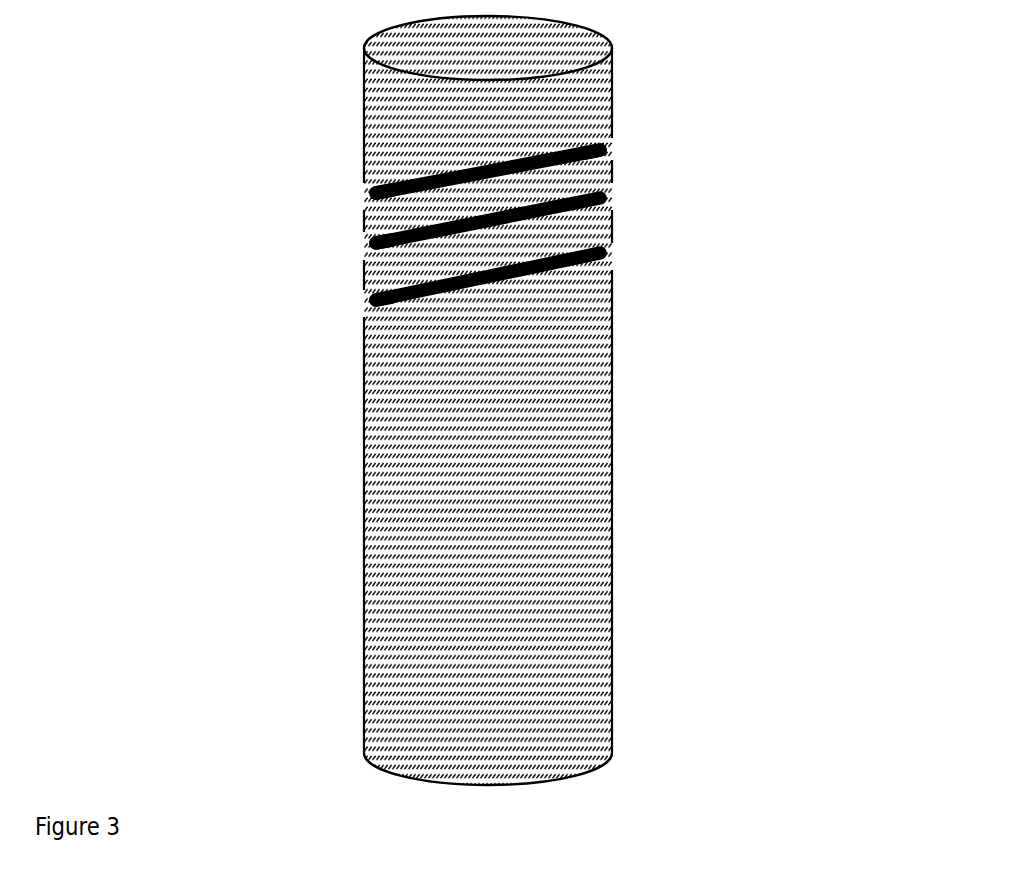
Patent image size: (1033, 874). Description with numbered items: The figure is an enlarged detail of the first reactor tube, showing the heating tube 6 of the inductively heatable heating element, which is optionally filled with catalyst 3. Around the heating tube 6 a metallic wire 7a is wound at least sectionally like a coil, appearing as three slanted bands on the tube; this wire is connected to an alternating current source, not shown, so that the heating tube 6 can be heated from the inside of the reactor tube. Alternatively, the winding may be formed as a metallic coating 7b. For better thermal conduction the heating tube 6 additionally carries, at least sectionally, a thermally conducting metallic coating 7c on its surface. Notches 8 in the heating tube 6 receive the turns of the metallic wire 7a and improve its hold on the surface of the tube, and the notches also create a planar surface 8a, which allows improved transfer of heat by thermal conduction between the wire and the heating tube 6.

The catalyst 3 is at (511, 401).
The heating tube 6 is at (613, 437).
The metallic wire 7a is at (511, 178).
The metallic coating 7b is at (511, 178).
The thermally conducting metallic coating 7c is at (613, 510).
The notches 8 is at (363, 314).
The planar surface 8a is at (603, 157).